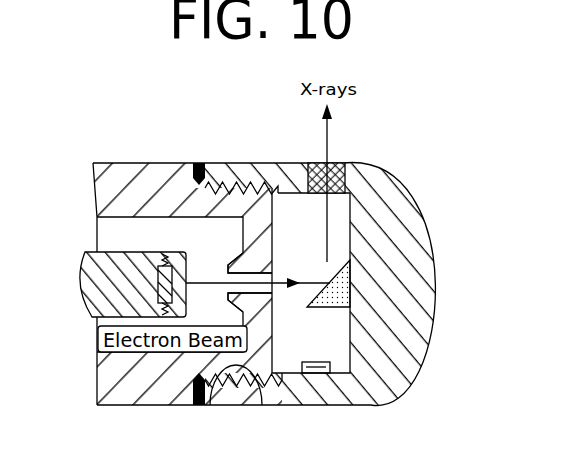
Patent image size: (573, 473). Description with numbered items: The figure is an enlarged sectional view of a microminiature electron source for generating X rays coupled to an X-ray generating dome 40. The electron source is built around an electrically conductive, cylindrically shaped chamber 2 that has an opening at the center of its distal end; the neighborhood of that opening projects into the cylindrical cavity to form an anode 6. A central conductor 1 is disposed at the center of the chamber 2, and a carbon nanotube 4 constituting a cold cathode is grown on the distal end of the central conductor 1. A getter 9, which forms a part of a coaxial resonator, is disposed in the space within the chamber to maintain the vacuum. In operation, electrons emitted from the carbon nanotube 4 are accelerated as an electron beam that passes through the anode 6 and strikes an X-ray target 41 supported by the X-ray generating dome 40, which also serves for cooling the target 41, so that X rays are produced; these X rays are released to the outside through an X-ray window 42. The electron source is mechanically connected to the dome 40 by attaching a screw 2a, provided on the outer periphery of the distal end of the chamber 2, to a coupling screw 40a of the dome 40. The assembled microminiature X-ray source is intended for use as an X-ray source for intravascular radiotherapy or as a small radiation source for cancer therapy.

The central conductor 1 is at (112, 287).
The chamber 2 is at (110, 193).
The screw 2a is at (223, 183).
The carbon nanotube 4 is at (166, 289).
The anode 6 is at (236, 266).
The getter 9 is at (332, 374).
The X-ray generating dome 40 is at (427, 225).
The coupling screw 40a is at (253, 183).
The X-ray target 41 is at (333, 310).
The X-ray window 42 is at (338, 163).